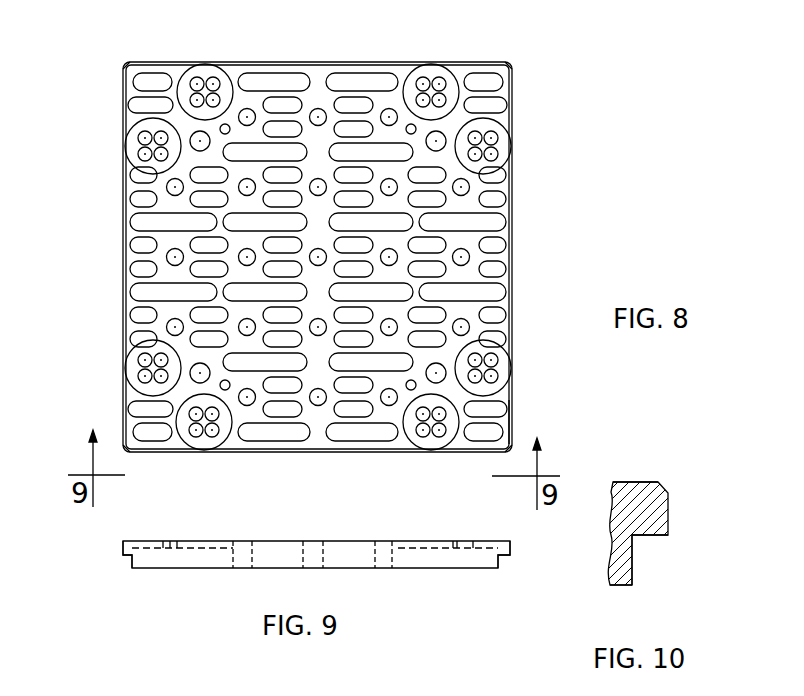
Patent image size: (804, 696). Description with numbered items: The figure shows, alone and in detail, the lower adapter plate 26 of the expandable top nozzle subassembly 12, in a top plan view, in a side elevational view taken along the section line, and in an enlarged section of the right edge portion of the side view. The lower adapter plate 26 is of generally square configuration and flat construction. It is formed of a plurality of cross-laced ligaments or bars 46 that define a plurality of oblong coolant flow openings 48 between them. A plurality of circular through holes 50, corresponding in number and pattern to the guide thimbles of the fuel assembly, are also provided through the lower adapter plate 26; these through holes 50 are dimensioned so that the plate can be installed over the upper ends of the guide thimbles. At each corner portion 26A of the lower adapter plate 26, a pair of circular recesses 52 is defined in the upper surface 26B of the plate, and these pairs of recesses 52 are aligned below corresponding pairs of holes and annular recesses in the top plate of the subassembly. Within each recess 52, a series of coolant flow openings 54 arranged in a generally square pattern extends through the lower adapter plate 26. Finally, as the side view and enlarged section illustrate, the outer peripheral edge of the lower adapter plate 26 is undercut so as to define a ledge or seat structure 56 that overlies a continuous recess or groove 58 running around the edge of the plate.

In FIG. 8, the top nozzle subassembly 12 is at (537, 100).
In FIG. 8, the lower adapter plate 26 is at (514, 273).
In FIG. 9, the lower adapter plate 26 is at (338, 541).
In FIG. 10, the lower adapter plate 26 is at (647, 481).
In FIG. 8, the corner portion 26A is at (457, 125).
In FIG. 8, the upper surface 26B is at (457, 210).
In FIG. 9, the upper surface 26B is at (193, 540).
In FIG. 10, the upper surface 26B is at (629, 481).
In FIG. 8, the cross-laced ligaments or bars 46 is at (168, 308).
In FIG. 8, the coolant flow openings 48 is at (490, 278).
In FIG. 8, the circular through holes 50 is at (384, 110).
In FIG. 9, the circular through holes 50 is at (309, 552).
In FIG. 8, the circular recesses 52 is at (184, 88).
In FIG. 9, the circular recesses 52 is at (163, 538).
In FIG. 8, the coolant flow openings 54 is at (212, 77).
In FIG. 8, the ledge or seat structure 56 is at (514, 425).
In FIG. 9, the ledge or seat structure 56 is at (125, 562).
In FIG. 10, the ledge or seat structure 56 is at (655, 552).
In FIG. 9, the continuous recess or groove 58 is at (502, 566).
In FIG. 10, the continuous recess or groove 58 is at (636, 568).